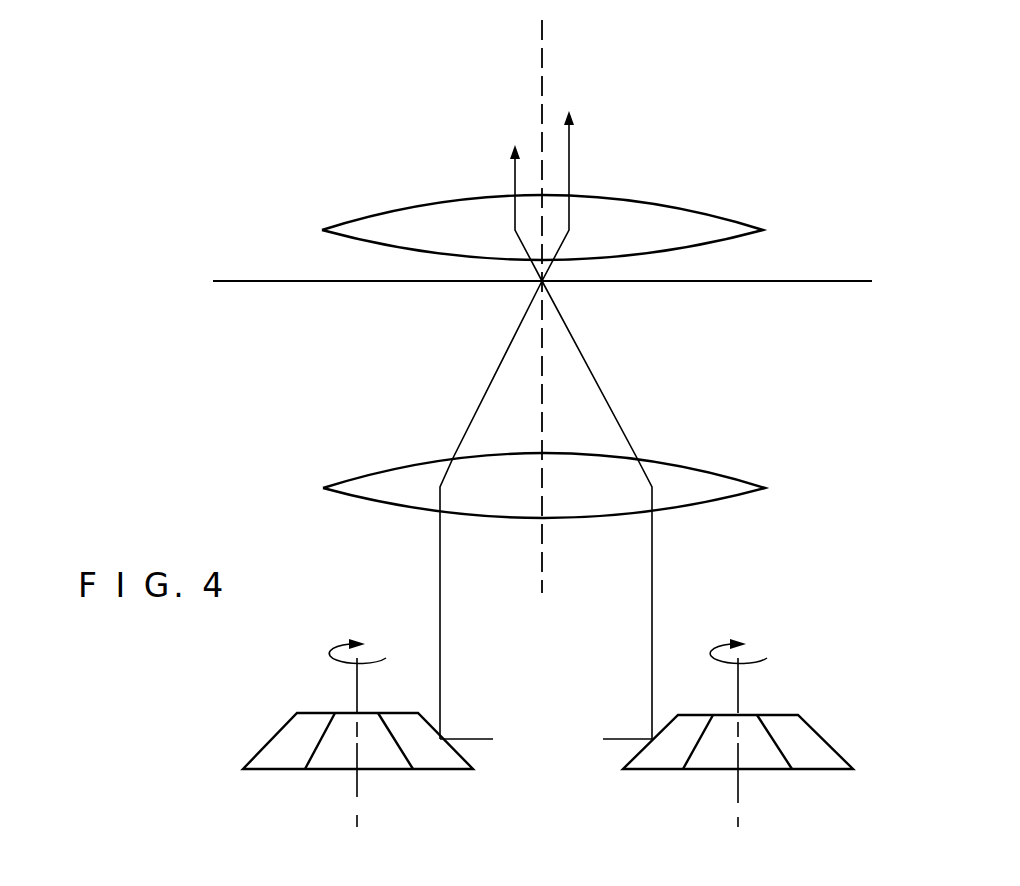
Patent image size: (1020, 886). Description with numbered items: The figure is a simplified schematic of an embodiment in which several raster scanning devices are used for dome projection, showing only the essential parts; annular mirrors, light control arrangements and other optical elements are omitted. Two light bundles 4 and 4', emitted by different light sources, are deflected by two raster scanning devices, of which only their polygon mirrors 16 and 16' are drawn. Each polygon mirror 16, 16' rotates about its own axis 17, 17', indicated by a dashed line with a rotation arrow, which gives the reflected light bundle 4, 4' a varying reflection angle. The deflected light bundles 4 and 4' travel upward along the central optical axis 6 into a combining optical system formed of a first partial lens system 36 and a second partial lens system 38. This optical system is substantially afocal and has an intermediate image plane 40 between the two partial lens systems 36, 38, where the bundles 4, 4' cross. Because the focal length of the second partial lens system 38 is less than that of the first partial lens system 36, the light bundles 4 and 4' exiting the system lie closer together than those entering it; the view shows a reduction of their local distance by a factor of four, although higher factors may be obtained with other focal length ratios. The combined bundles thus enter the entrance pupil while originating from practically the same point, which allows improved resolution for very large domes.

The optical axis 6 is at (543, 65).
The light bundle 4 is at (505, 498).
The light bundle 4' is at (599, 481).
The second partial lens system 38 is at (658, 226).
The first partial lens system 36 is at (695, 482).
The intermediate image plane 40 is at (272, 281).
The polygon mirror 16 is at (315, 769).
The axis 17 is at (320, 760).
The polygon mirror 16' is at (740, 714).
The axis 17' is at (773, 757).